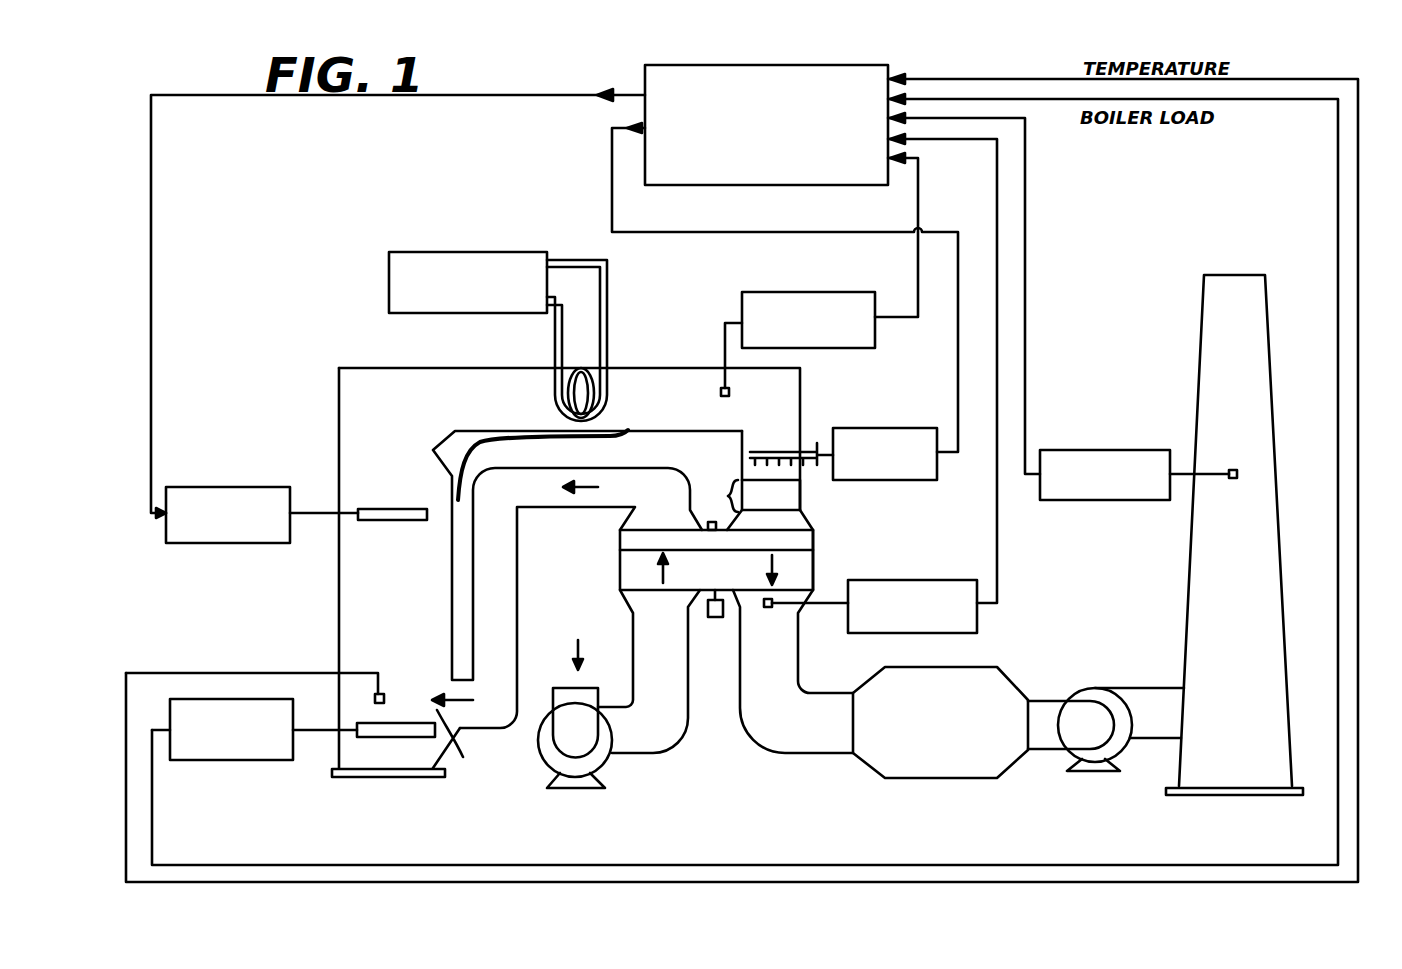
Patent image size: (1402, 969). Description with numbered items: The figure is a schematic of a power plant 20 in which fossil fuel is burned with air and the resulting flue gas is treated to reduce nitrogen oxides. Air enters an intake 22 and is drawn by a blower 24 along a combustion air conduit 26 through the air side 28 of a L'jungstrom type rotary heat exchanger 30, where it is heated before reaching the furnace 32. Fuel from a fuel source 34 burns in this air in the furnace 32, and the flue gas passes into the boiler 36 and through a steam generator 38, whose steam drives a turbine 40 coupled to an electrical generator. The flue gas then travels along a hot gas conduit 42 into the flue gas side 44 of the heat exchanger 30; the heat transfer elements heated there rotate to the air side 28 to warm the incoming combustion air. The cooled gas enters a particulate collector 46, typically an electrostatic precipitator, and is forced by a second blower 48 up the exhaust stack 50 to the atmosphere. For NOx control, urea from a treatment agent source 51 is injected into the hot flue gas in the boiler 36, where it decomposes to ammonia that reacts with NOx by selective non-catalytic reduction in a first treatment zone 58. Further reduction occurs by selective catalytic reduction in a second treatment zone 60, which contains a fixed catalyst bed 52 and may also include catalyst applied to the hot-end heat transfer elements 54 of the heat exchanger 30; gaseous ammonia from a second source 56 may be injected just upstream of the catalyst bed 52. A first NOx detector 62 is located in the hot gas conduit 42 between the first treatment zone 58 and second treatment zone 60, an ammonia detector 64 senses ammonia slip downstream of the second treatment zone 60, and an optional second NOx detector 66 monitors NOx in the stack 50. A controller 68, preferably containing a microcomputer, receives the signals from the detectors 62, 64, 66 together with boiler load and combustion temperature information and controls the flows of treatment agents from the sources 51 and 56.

The power plant 20 is at (627, 266).
The intake 22 is at (568, 688).
The blower 24 is at (545, 768).
The combustion air conduit 26 is at (650, 753).
The air side 28 is at (620, 575).
The rotary heat exchanger 30 is at (813, 575).
The furnace 32 is at (417, 735).
The fuel source 34 is at (228, 760).
The boiler 36 is at (339, 602).
The steam generator 38 is at (608, 397).
The turbine 40 is at (447, 252).
The hot gas conduit 42 is at (493, 368).
The flue gas side 44 is at (813, 560).
The particulate collector 46 is at (925, 778).
The blower 48 is at (1087, 772).
The exhaust stack 50 is at (1188, 578).
The treatment agent source 51 is at (240, 487).
The fixed catalyst bed 52 is at (790, 496).
The hot-end heat transfer elements 54 is at (813, 542).
The second treatment agent source 56 is at (915, 428).
The first treatment zone 58 is at (587, 555).
The second treatment zone 60 is at (719, 495).
The first NOx detector 62 is at (845, 292).
The ammonia detector 64 is at (950, 580).
The second NOx detector 66 is at (1125, 450).
The controller 68 is at (767, 187).